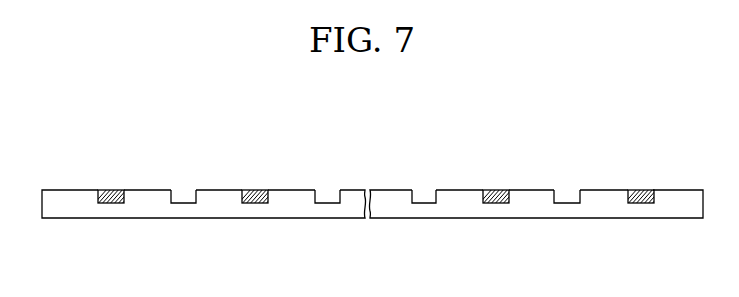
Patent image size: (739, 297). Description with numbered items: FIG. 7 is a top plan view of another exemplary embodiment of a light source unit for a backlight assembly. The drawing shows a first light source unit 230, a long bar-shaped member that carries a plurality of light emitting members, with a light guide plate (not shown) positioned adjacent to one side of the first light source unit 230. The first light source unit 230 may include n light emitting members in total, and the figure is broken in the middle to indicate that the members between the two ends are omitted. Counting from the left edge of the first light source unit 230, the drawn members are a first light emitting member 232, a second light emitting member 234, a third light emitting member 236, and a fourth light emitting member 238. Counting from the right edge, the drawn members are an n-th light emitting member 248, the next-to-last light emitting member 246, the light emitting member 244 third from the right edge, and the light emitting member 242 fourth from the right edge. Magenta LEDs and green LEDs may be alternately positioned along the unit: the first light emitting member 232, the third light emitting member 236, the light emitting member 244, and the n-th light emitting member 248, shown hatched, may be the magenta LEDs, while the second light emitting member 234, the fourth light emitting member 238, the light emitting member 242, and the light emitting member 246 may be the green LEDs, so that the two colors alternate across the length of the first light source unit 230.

The first light source unit 230 is at (62, 188).
The first light emitting member 232 is at (111, 204).
The second light emitting member 234 is at (184, 188).
The third light emitting member 236 is at (254, 204).
The fourth light emitting member 238 is at (326, 188).
The n-3-th light emitting member 242 is at (424, 188).
The n-2-th light emitting member 244 is at (498, 204).
The n-1-th light emitting member 246 is at (566, 188).
The n-th light emitting member 248 is at (640, 204).